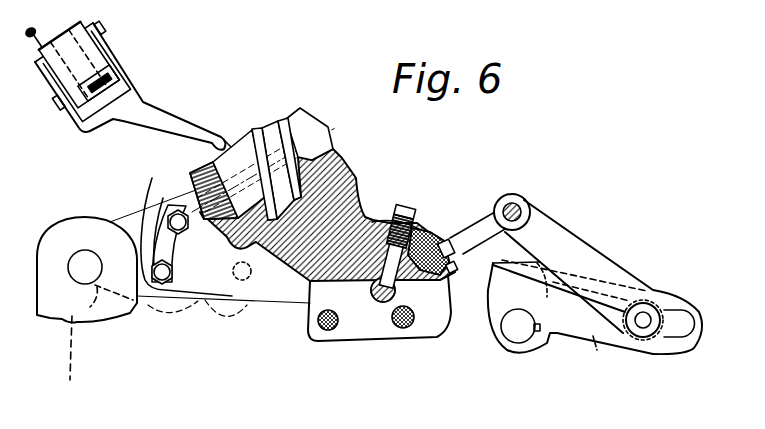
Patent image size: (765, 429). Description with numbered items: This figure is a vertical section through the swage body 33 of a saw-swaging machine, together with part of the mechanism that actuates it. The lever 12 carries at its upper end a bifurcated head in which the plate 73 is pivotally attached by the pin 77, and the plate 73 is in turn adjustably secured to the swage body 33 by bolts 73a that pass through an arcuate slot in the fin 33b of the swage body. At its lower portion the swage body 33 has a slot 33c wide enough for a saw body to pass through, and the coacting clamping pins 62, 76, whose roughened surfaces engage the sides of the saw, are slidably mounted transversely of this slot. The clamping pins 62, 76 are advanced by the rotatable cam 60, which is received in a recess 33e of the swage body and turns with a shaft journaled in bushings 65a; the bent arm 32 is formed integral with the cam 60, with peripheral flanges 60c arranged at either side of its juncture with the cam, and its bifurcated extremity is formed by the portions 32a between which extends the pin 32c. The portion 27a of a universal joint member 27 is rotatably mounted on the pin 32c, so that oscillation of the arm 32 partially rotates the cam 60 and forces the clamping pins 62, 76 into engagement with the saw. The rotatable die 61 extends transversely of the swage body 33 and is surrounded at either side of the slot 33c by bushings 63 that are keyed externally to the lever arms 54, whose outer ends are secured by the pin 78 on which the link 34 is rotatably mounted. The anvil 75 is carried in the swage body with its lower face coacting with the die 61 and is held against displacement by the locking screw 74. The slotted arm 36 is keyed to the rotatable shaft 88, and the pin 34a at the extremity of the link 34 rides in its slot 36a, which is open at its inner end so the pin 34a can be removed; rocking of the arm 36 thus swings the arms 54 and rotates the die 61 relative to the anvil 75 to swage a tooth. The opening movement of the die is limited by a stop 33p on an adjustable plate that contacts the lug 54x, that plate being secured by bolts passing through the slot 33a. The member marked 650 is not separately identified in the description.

The lever 12 is at (60, 228).
The pin 77 is at (88, 258).
The universal joint member 27 is at (45, 48).
The portion of universal joint member 27a is at (70, 80).
The bent arm 32 is at (185, 120).
The bifurcated portion of arm 32a is at (115, 70).
The pin 32c is at (98, 32).
The swage body 33 is at (352, 188).
The slot 33a is at (153, 215).
The fin 33b is at (246, 283).
The slot 33c is at (380, 340).
The recess 33e is at (348, 165).
The stop 33p is at (458, 268).
The link 34 is at (578, 250).
The pin 34a is at (643, 330).
The slotted arm 36 is at (672, 296).
The slot 36a is at (680, 335).
The lever arms 54 is at (478, 222).
The lug 54x is at (445, 240).
The rotatable cam 60 is at (270, 125).
The peripheral flanges 60c is at (280, 124).
The rotatable die 61 is at (375, 300).
The clamping pins 62 is at (405, 330).
The bushing 63 is at (360, 295).
The bushings 65a is at (311, 109).
The nut end 650 is at (331, 128).
The plate 73 is at (133, 213).
The bolts 73a is at (184, 230).
The locking screw 74 is at (410, 211).
The anvil 75 is at (396, 258).
The clamping pins 76 is at (322, 330).
The pin 78 is at (514, 205).
The rotatable shaft 88 is at (530, 343).